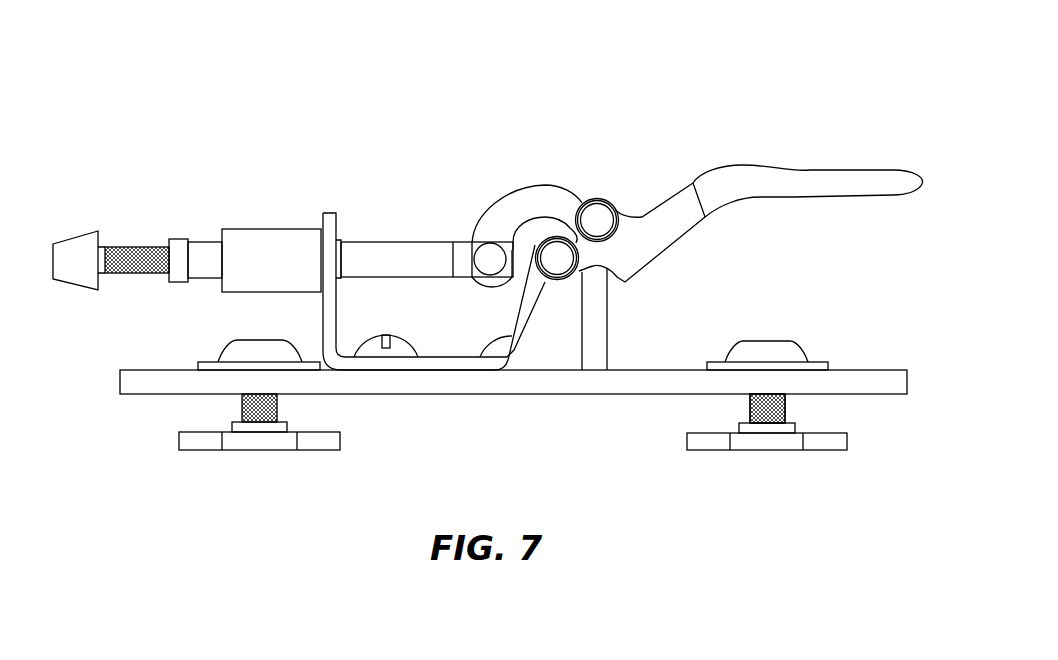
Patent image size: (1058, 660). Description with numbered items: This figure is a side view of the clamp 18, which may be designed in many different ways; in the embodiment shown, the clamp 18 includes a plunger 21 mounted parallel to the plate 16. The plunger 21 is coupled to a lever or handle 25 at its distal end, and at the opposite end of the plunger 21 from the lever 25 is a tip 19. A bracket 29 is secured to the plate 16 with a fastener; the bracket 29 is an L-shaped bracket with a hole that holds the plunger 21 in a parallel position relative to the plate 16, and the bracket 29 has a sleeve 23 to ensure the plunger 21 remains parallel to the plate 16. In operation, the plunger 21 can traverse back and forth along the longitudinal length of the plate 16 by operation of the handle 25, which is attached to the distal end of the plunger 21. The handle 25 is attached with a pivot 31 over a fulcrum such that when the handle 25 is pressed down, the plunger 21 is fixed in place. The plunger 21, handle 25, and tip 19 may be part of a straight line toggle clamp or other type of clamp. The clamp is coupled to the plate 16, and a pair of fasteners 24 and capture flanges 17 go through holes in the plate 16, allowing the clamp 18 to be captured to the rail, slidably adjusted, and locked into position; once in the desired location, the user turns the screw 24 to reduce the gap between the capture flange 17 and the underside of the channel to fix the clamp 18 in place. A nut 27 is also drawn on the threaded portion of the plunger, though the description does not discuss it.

The plate 16 is at (657, 368).
The capture flange 17 is at (179, 439).
The clamp 18 is at (222, 145).
The tip 19 is at (77, 252).
The plunger 21 is at (389, 258).
The sleeve 23 is at (273, 240).
The fastener 24 is at (230, 342).
The lever 25 is at (556, 198).
The adjusting nut 27 is at (178, 243).
The bracket 29 is at (437, 368).
The pivot 31 is at (555, 265).